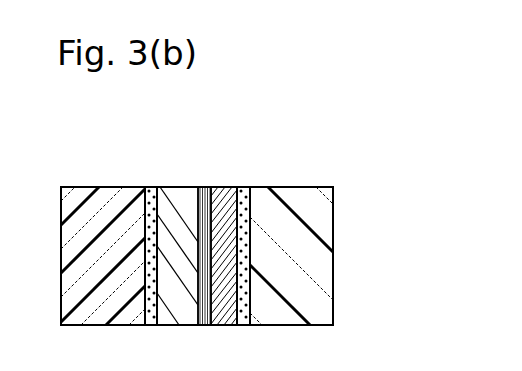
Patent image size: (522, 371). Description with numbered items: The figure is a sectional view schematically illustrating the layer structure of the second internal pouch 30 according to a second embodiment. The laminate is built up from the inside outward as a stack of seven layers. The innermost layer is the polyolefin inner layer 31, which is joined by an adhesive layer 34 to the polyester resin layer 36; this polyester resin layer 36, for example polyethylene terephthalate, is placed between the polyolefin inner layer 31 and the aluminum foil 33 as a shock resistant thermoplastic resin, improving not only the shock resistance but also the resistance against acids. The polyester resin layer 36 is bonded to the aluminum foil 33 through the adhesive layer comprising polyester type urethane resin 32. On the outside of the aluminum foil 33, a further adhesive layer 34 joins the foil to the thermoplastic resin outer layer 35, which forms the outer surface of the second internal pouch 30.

The second internal pouch 30 is at (328, 164).
The polyolefin inner layer 31 is at (93, 187).
The adhesive layer comprising polyester type urethane resin 32 is at (203, 187).
The aluminum foil 33 is at (227, 187).
The adhesive layer 34 is at (150, 187).
The thermoplastic resin outer layer 35 is at (303, 187).
The polyester resin layer 36 is at (176, 187).